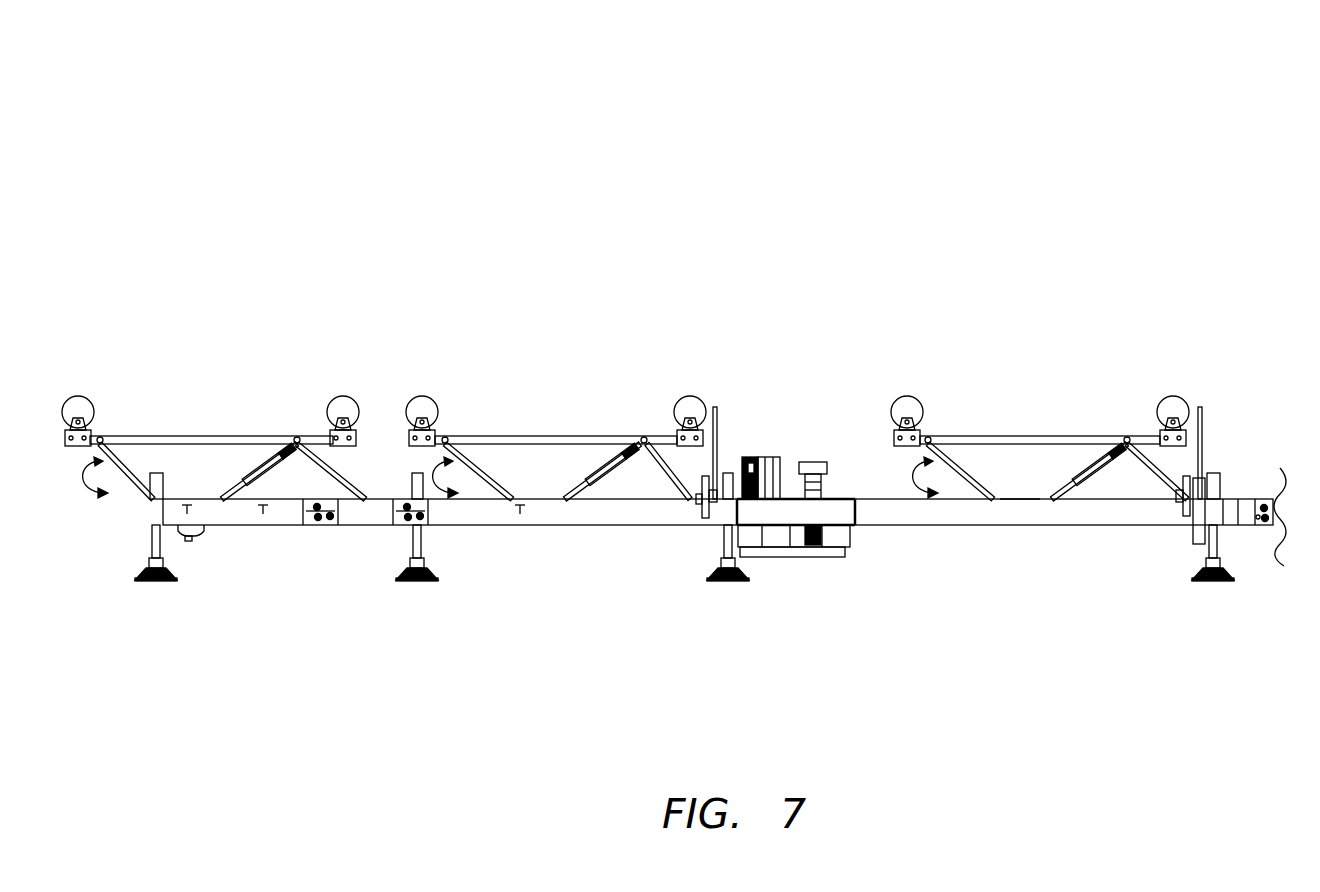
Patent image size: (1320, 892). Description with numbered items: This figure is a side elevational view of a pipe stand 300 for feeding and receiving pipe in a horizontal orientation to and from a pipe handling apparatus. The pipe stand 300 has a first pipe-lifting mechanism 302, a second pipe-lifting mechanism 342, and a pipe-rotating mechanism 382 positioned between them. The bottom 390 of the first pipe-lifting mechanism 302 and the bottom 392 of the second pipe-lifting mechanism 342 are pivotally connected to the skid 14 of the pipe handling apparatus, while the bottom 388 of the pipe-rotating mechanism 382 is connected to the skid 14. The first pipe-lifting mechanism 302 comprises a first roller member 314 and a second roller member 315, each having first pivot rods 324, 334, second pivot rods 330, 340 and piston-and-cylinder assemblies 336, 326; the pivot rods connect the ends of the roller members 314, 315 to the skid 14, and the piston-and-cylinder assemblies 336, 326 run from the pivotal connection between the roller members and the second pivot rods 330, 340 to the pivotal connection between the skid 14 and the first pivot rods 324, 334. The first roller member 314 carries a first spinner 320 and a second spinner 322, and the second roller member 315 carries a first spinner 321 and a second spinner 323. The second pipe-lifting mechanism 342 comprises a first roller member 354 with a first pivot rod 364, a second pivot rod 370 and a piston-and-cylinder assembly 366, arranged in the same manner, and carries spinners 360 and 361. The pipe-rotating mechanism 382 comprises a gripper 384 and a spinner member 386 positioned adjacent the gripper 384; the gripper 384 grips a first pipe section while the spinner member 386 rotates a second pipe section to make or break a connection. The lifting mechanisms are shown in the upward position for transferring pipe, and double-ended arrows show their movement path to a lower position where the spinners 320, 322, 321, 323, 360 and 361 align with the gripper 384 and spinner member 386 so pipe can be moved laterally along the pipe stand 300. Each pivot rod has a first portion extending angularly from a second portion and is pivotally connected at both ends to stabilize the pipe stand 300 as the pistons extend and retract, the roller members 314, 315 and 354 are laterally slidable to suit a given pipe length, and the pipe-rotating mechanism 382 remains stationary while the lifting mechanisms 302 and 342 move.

The pipe stand 300 is at (831, 88).
The first pipe-lifting mechanism 302 is at (364, 296).
The skid 14 is at (243, 515).
The first roller member 314 is at (165, 436).
The second roller member 315 is at (490, 436).
The first spinner 320 is at (83, 397).
The first spinner 321 is at (425, 397).
The second spinner 322 is at (340, 397).
The second spinner 323 is at (690, 397).
The first pivot rod 324 is at (135, 483).
The piston-and-cylinder assembly 326 is at (585, 470).
The second pivot rod 330 is at (338, 523).
The first pivot rod 334 is at (490, 497).
The piston-and-cylinder assembly 336 is at (240, 490).
The second pivot rod 340 is at (675, 497).
The second pipe-lifting mechanism 342 is at (1081, 321).
The first roller member 354 is at (1090, 436).
The spinner 360 is at (905, 397).
The spinner 361 is at (1175, 397).
The first pivot rod 364 is at (968, 492).
The piston-and-cylinder assembly 366 is at (1076, 487).
The second pivot rod 370 is at (1158, 483).
The pipe-rotating mechanism 382 is at (796, 326).
The gripper 384 is at (755, 455).
The spinner member 386 is at (812, 460).
The bottom of the pipe-rotating mechanism 388 is at (839, 563).
The bottom of the first pipe-lifting mechanism 390 is at (378, 484).
The bottom of the second pipe-lifting mechanism 392 is at (1022, 492).